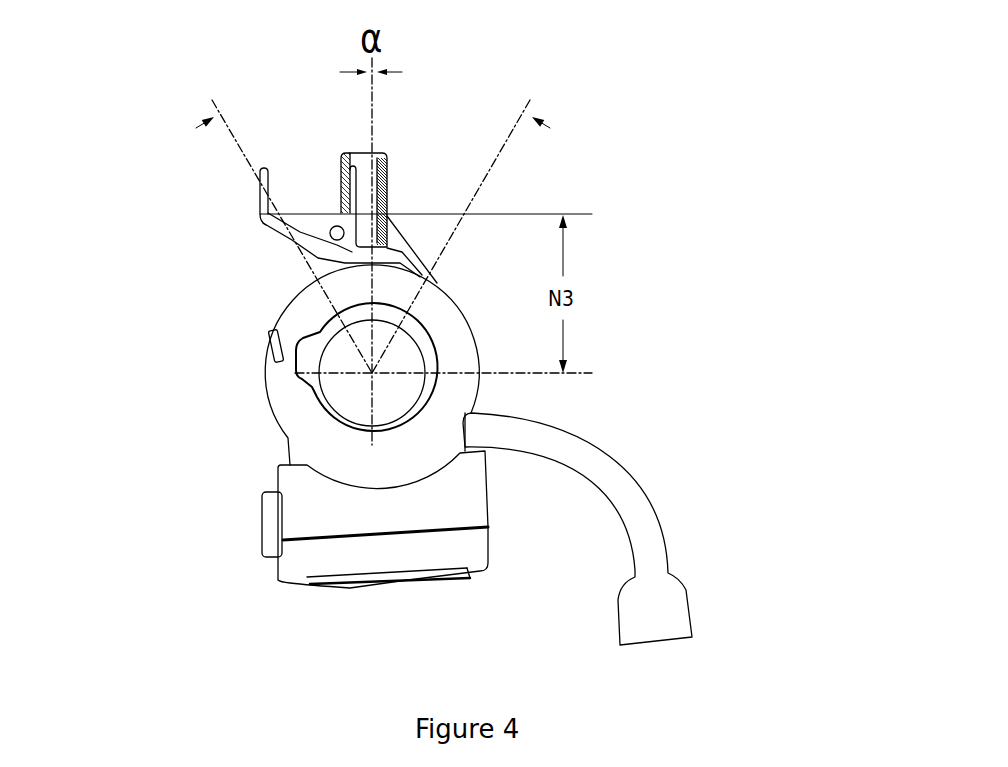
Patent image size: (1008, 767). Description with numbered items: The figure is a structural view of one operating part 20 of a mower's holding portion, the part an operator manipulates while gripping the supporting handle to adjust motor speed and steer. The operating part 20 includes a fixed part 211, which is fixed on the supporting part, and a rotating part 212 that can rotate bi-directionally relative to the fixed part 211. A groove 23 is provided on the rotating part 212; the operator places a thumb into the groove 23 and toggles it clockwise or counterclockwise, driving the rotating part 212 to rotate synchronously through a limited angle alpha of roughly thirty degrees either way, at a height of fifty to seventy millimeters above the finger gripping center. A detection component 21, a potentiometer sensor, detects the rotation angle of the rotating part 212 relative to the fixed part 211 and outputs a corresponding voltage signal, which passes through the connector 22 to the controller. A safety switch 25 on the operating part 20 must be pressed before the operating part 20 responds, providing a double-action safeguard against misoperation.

The operating part 20 is at (565, 165).
The detection component 21 is at (300, 313).
The fixed part 211 is at (337, 365).
The rotating part 212 is at (327, 445).
The connector 22 is at (647, 597).
The groove 23 is at (260, 216).
The safety switch 25 is at (272, 522).